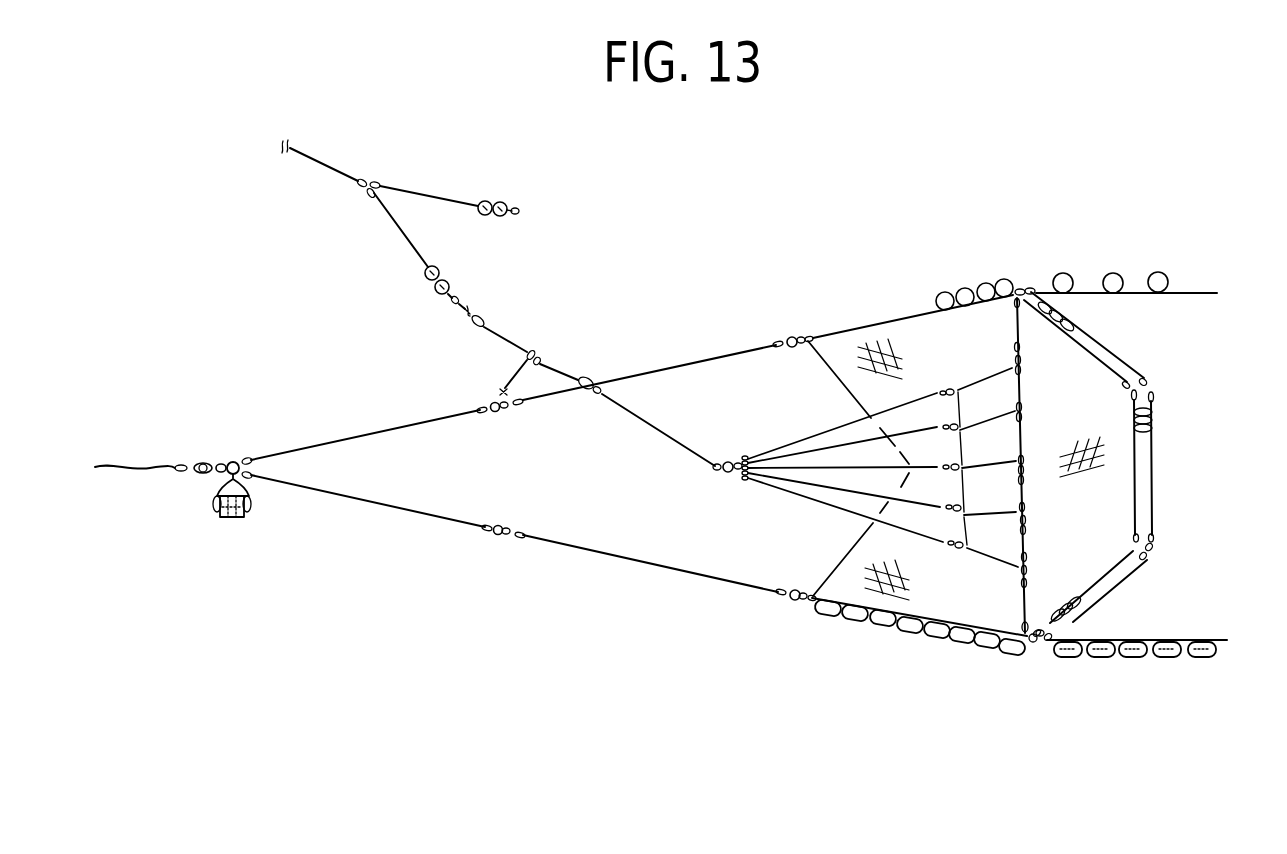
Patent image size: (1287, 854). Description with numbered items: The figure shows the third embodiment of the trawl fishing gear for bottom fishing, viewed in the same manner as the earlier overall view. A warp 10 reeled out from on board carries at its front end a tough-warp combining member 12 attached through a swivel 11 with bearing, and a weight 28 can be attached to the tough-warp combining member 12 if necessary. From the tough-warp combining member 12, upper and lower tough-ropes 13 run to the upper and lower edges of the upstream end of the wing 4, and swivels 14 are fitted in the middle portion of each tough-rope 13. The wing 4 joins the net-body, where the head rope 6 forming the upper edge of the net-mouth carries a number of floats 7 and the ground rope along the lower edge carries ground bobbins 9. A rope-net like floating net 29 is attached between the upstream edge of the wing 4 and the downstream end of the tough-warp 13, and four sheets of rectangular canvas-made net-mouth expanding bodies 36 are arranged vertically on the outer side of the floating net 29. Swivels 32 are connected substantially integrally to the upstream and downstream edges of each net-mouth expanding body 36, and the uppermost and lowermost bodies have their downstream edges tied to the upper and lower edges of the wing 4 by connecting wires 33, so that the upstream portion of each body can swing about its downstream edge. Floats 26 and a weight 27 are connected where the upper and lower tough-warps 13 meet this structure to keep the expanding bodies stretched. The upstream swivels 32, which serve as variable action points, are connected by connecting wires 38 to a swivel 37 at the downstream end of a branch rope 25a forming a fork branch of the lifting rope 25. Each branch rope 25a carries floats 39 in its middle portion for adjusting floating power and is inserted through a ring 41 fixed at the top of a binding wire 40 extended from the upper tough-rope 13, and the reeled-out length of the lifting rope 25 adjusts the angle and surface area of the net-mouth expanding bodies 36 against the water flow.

The wing 4 is at (1183, 620).
The head rope 6 is at (1193, 291).
The floats 7 is at (1153, 272).
The ground bobbins 9 is at (1162, 659).
The warp 10 is at (123, 467).
The swivel with bearing 11 is at (203, 462).
The tough-warp combining member 12 is at (234, 462).
The tough-rope 13 is at (347, 440).
The swivel 14 is at (793, 337).
The lifting rope 25 is at (333, 168).
The branch rope 25a is at (408, 243).
The floats 26 is at (975, 283).
The weight 27 is at (953, 636).
The weight 28 is at (234, 518).
The floating net 29 is at (1123, 517).
The swivel 32 is at (947, 390).
The connecting wire 33 is at (1047, 290).
The net-mouth expanding body 36 is at (984, 440).
The swivel 37 is at (722, 474).
The connecting wire 38 is at (801, 494).
The floats 39 is at (488, 200).
The binding wire 40 is at (508, 373).
The ring 41 is at (531, 352).